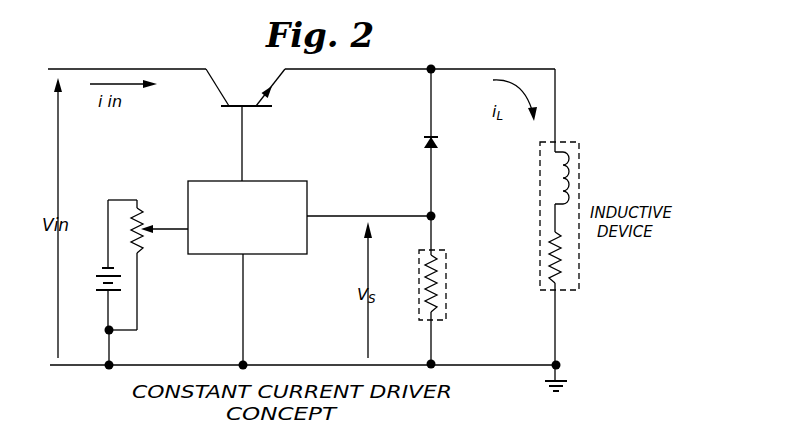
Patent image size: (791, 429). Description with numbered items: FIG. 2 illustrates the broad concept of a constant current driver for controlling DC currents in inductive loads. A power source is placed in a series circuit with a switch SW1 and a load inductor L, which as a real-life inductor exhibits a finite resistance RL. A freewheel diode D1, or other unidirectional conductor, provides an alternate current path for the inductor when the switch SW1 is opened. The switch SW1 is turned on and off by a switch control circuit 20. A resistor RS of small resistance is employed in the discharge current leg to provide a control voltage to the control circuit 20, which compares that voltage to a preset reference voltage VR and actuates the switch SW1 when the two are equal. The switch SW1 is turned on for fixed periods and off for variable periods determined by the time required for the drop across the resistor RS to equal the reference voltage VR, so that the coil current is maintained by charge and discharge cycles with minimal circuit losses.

The switch control circuit 20 is at (286, 181).
The switch SW1 is at (245, 114).
The freewheel diode D1 is at (444, 148).
The resistor RS is at (446, 285).
The inductor L is at (542, 178).
The resistance RL is at (533, 257).
The reference voltage VR is at (148, 265).